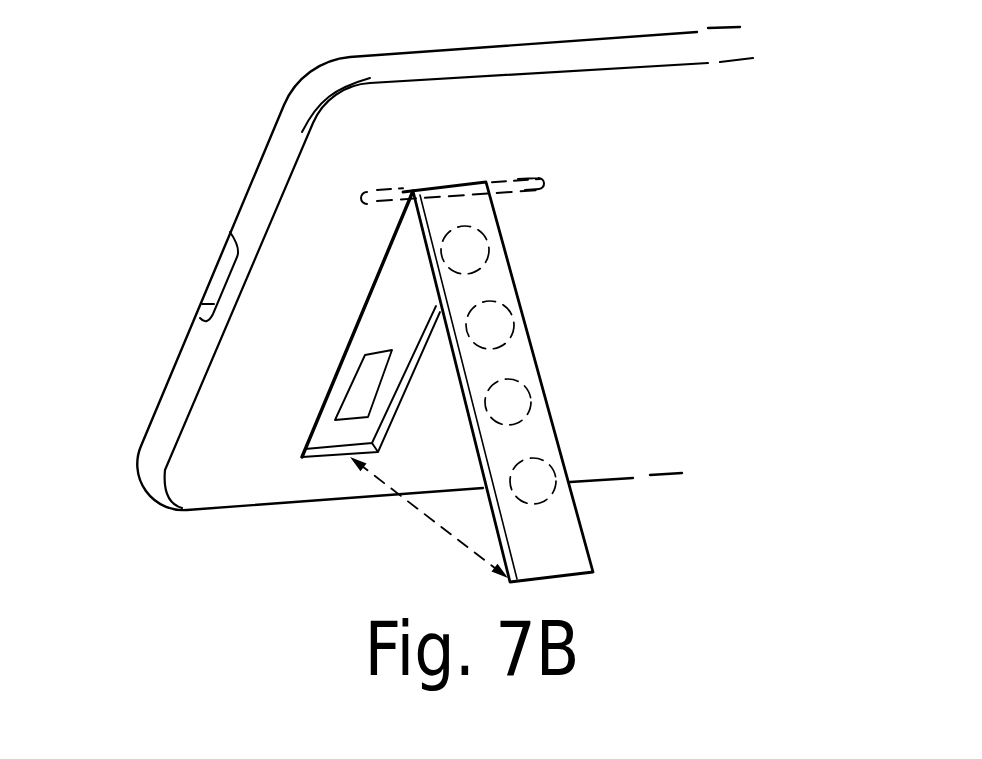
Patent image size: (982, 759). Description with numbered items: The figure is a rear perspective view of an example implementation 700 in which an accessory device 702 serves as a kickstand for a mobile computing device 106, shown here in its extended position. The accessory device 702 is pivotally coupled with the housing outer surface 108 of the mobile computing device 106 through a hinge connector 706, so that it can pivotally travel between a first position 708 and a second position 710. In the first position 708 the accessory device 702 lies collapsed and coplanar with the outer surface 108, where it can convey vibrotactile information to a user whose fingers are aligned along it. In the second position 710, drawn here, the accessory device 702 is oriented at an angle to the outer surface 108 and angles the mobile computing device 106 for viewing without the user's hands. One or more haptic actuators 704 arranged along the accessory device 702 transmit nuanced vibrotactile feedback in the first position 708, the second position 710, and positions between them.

The example implementation 700 is at (172, 88).
The mobile computing device 106 is at (350, 57).
The outer surface 108 is at (276, 328).
The accessory device 702 is at (577, 547).
The haptic actuators 704 is at (505, 337).
The hinge connector 706 is at (512, 184).
The first position 708 is at (352, 469).
The second position 710 is at (498, 574).